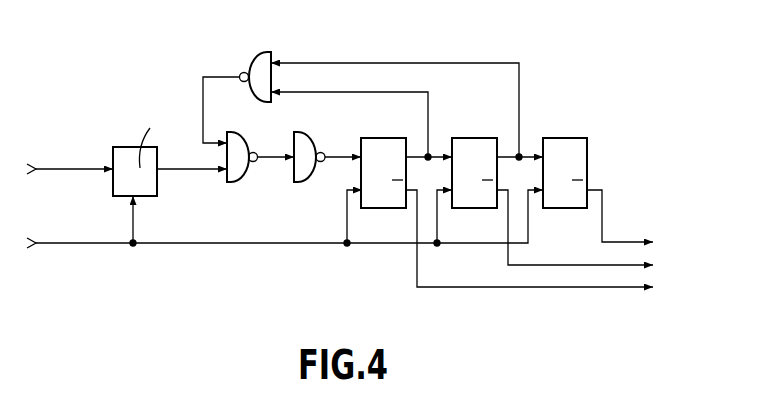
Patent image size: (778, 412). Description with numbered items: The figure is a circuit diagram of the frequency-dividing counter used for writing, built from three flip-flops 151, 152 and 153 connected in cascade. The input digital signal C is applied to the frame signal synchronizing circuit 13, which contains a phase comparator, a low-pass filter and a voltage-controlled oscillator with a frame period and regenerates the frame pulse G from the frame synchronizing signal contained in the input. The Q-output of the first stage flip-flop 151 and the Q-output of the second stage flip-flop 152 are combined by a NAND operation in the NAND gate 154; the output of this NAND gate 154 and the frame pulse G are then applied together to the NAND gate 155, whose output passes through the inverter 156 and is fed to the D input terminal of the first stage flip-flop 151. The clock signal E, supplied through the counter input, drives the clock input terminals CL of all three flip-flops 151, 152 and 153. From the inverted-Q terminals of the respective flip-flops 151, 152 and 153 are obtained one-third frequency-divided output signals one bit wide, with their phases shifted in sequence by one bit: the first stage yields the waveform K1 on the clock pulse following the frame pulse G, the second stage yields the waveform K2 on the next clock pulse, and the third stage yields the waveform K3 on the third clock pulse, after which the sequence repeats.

The frame signal synchronizing circuit 13 is at (124, 147).
The first stage flip-flop 151 is at (391, 138).
The second stage flip-flop 152 is at (490, 138).
The third stage flip-flop 153 is at (583, 138).
The NAND gate 154 is at (268, 52).
The NAND gate 155 is at (231, 184).
The inverter 156 is at (304, 184).
The input digital signal C is at (77, 172).
The clock signal E is at (77, 246).
The frame pulse G is at (204, 171).
The first stage output waveform K1 is at (570, 288).
The second stage output waveform K2 is at (569, 244).
The third stage output waveform K3 is at (640, 240).